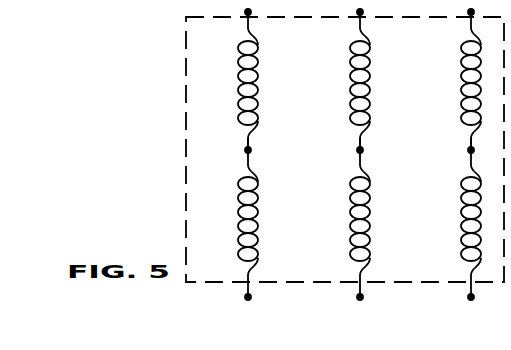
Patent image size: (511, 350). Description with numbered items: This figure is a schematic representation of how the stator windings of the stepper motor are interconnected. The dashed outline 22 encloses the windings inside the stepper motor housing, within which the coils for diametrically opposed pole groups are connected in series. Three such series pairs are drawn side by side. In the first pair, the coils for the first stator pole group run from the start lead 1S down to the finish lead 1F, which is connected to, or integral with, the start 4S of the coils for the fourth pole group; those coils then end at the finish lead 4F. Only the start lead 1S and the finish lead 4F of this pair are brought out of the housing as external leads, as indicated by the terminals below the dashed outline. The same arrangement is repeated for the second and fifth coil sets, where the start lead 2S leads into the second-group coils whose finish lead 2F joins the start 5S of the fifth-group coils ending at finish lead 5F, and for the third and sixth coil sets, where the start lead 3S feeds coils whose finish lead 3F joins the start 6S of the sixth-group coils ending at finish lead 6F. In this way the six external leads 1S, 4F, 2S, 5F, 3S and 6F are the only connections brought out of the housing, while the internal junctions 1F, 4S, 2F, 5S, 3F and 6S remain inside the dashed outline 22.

The stator winding assembly 22 is at (203, 108).
The start lead 1S is at (248, 22).
The start lead 2S is at (360, 22).
The start lead 3S is at (471, 22).
The finish lead 1F is at (234, 141).
The finish lead 2F is at (346, 141).
The finish lead 3F is at (457, 141).
The start lead 4S is at (237, 166).
The start lead 5S is at (349, 166).
The start lead 6S is at (460, 166).
The finish lead 4F is at (244, 304).
The finish lead 5F is at (356, 304).
The finish lead 6F is at (467, 304).